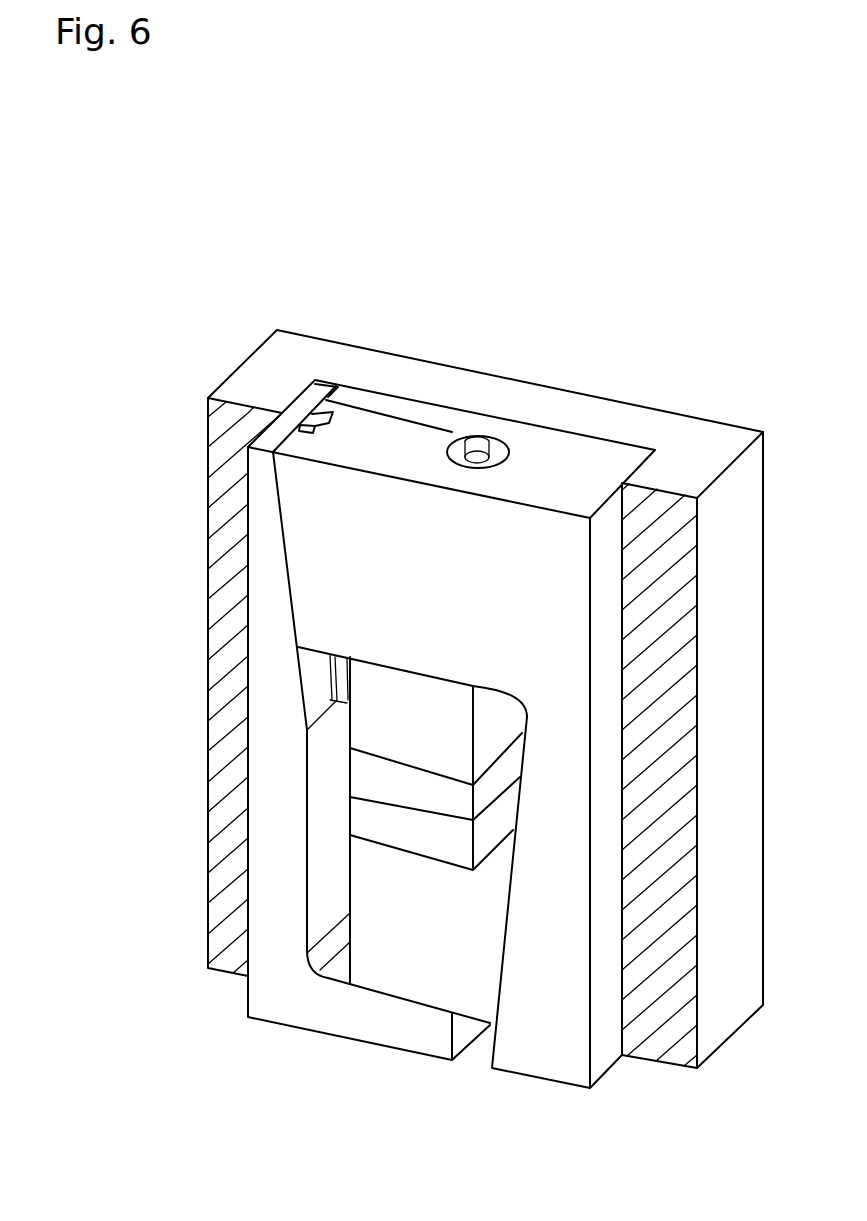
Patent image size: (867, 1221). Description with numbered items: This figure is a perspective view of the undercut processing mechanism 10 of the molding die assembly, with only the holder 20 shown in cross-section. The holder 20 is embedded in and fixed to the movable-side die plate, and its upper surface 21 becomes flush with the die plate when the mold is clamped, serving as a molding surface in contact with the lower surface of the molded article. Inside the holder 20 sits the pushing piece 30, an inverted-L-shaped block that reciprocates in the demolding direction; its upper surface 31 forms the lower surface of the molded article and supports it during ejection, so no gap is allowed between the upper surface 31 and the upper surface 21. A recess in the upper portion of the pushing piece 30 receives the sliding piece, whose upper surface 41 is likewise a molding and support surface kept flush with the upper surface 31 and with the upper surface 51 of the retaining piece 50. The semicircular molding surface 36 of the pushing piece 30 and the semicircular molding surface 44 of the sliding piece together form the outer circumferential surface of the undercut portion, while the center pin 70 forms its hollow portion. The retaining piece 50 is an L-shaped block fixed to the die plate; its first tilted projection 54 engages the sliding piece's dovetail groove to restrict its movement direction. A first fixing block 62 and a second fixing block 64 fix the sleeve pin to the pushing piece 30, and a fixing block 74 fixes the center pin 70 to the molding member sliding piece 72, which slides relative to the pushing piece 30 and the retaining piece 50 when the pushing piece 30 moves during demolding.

The undercut processing mechanism 10 is at (460, 150).
The holder 20 is at (240, 496).
The upper surface 21 is at (253, 387).
The pushing piece 30 is at (305, 537).
The upper surface 31 is at (637, 452).
The molding surface 36 is at (495, 446).
The upper surface 41 is at (391, 430).
The molding surface 44 is at (465, 443).
The retaining piece 50 is at (270, 606).
The upper surface 51 is at (318, 384).
The first tilted projection 54 is at (312, 414).
The first fixing block 62 is at (375, 722).
The second fixing block 64 is at (375, 777).
The center pin 70 is at (480, 455).
The molding member sliding piece 72 is at (375, 866).
The fixing block 74 is at (375, 820).